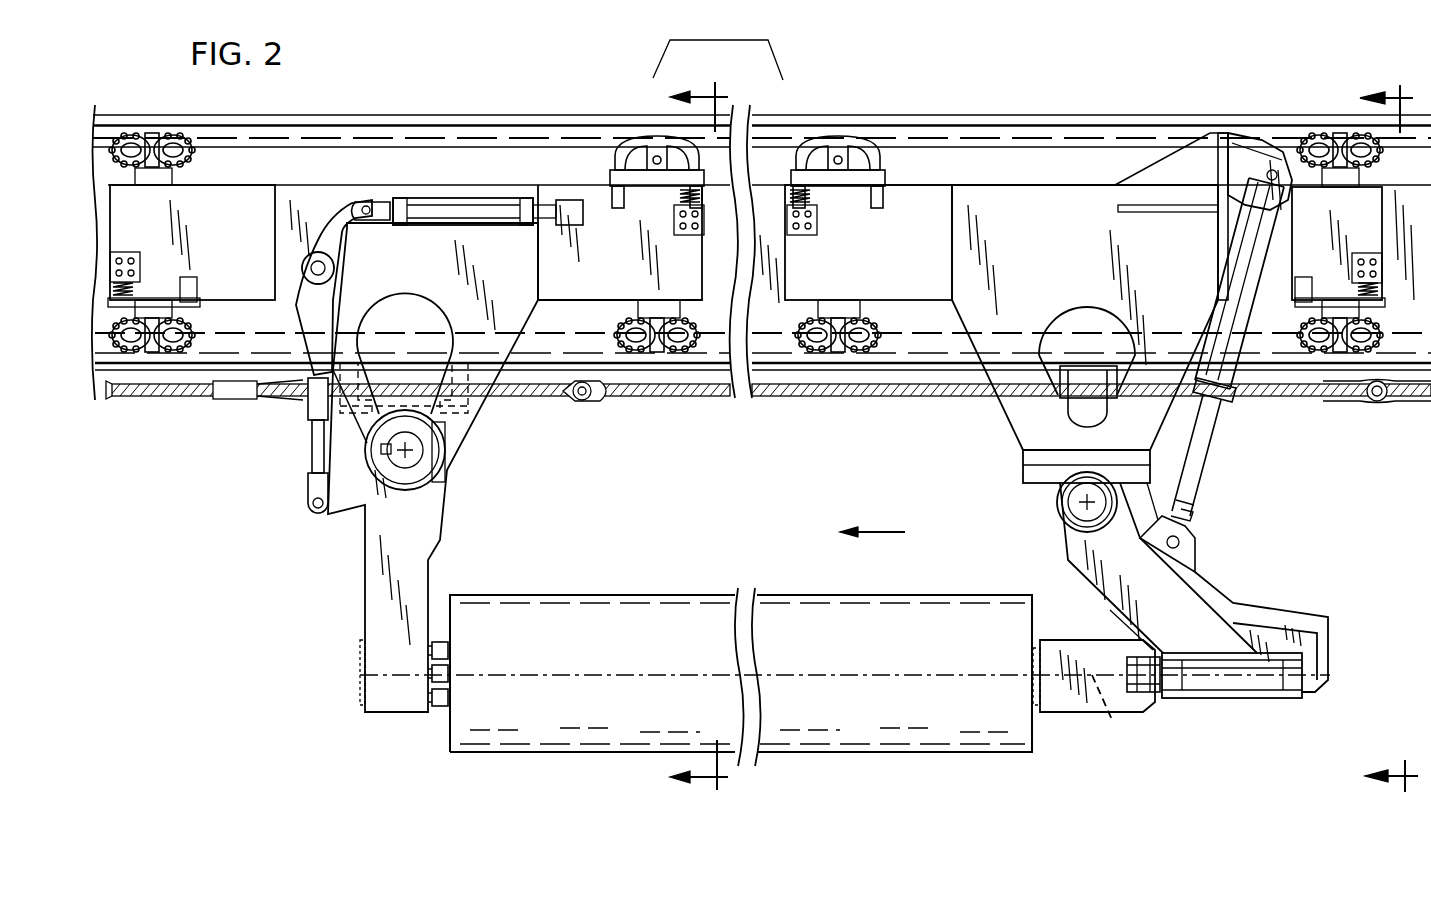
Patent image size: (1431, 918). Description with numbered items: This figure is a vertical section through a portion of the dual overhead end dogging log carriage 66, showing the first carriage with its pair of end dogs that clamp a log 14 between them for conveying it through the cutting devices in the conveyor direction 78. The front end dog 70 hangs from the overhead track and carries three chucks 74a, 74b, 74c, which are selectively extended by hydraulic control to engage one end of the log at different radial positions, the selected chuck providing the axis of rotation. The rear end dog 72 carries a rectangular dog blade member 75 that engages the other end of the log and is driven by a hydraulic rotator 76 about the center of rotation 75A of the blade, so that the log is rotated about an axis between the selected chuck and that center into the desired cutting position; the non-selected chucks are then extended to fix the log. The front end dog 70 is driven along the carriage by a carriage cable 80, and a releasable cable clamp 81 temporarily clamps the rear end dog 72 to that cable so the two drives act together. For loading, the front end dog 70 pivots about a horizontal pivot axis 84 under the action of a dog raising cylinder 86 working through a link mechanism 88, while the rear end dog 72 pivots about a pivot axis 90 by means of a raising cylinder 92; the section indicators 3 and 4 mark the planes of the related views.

The log carriage 66 is at (898, 86).
The carriage cable 80 is at (872, 398).
The front end dog 70 is at (393, 713).
The horizontal pivot axis 84 is at (413, 447).
The link mechanism 88 is at (297, 305).
The dog raising cylinder 86 is at (460, 197).
The chuck 74a is at (442, 641).
The chuck 74b is at (450, 666).
The chuck 74c is at (442, 706).
The log 14 is at (633, 596).
The dog blade member 75 is at (1080, 713).
The center of rotation 75A is at (1116, 716).
The hydraulic rotator 76 is at (1222, 700).
The rear end dog 72 is at (1122, 590).
The releasable cable clamp 81 is at (1072, 390).
The pivot axis 90 is at (1085, 502).
The raising cylinder 92 is at (1268, 268).
The conveyor direction 78 is at (876, 532).
The section line 4- 4 is at (704, 435).
The section line 3- 3 is at (1391, 439).